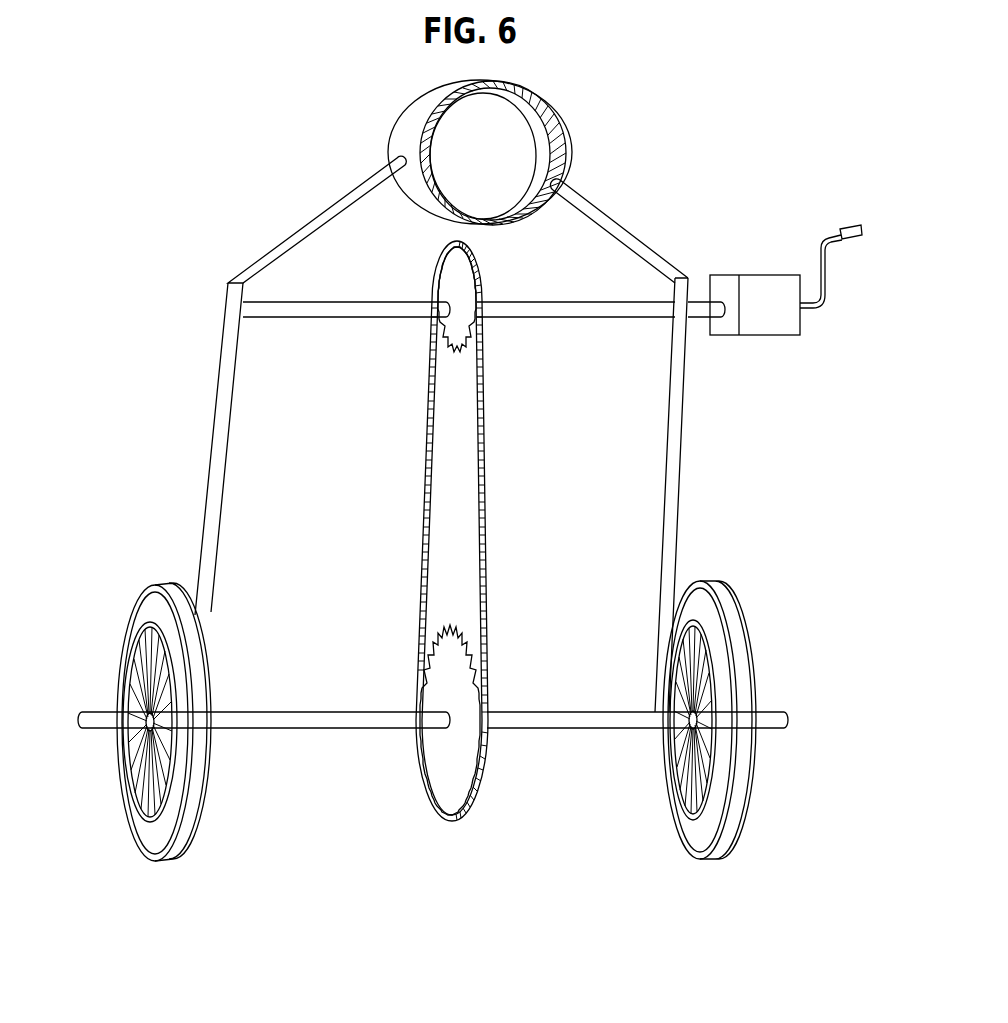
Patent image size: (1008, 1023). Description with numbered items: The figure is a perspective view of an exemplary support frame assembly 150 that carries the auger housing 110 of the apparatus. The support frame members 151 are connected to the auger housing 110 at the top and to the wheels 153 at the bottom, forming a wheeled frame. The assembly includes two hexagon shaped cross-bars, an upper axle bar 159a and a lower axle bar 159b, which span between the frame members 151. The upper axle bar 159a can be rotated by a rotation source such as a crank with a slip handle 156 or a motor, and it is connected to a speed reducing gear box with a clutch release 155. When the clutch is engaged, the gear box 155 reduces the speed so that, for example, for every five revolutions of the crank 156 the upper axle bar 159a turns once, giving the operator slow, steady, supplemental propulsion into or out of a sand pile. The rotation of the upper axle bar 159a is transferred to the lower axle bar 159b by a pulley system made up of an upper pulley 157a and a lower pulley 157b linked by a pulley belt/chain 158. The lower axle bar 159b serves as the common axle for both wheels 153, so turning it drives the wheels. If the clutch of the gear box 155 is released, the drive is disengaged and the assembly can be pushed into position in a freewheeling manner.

The support frame assembly 150 is at (224, 136).
The auger housing 110 is at (497, 168).
The support frame members 151 is at (281, 238).
The wheels 153 is at (137, 605).
The speed reducing gear box with clutch release 155 is at (766, 320).
The crank with slip handle 156 is at (845, 223).
The pulley 157a is at (437, 258).
The pulley 157b is at (435, 692).
The pulley belt/chain 158 is at (422, 523).
The upper axle bar 159a is at (340, 315).
The lower axle bar 159b is at (555, 730).